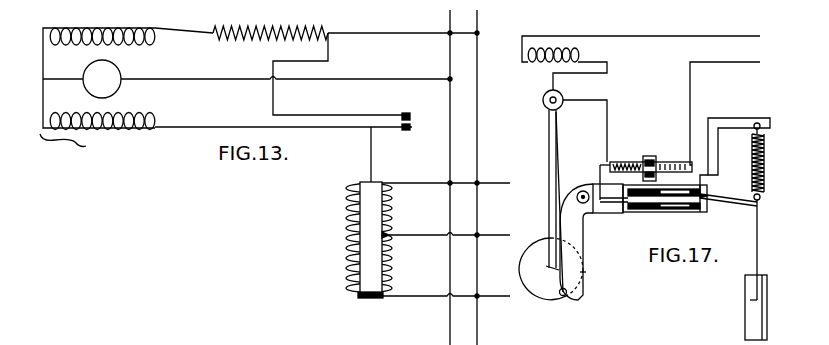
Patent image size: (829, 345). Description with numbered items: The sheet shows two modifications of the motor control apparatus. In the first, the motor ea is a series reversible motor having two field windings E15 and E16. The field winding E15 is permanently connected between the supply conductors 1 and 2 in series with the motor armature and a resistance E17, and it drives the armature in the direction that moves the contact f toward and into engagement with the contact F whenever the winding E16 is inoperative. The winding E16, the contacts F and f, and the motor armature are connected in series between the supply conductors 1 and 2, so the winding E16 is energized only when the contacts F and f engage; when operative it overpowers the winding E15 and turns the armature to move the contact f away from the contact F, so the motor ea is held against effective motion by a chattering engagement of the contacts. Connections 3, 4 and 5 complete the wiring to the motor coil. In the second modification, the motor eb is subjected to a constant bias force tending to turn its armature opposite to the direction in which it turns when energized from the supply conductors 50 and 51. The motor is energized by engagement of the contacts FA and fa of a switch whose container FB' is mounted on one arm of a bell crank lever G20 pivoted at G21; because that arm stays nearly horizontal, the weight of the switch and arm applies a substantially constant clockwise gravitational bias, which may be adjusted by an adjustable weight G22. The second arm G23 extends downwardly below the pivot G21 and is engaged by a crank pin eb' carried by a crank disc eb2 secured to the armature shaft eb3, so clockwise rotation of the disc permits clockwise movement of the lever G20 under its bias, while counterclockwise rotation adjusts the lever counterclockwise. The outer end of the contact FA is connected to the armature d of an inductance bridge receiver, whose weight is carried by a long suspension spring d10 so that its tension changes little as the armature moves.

In FIG. 13, the field winding E15 is at (100, 30).
In FIG. 13, the resistance E17 is at (247, 28).
In FIG. 13, the field winding E16 is at (148, 135).
In FIG. 13, the motor ea is at (63, 147).
In FIG. 13, the contact f is at (406, 112).
In FIG. 13, the contact F is at (406, 132).
In FIG. 13, the supply conductor 1 is at (448, 28).
In FIG. 13, the supply conductor 2 is at (480, 28).
In FIG. 13, the conductor 3 is at (415, 296).
In FIG. 13, the conductor 4 is at (417, 186).
In FIG. 13, the conductor 5 is at (440, 235).
In FIG. 17, the supply conductor 50 is at (653, 40).
In FIG. 17, the supply conductor 51 is at (724, 62).
In FIG. 17, the motor eb is at (575, 121).
In FIG. 17, the crank pin eb' is at (552, 310).
In FIG. 17, the crank disc eb2 is at (533, 252).
In FIG. 17, the armature shaft eb3 is at (548, 268).
In FIG. 17, the bell crank lever G20 is at (590, 226).
In FIG. 17, the pivot G21 is at (584, 190).
In FIG. 17, the adjustable weight G22 is at (652, 156).
In FIG. 17, the second arm G23 is at (584, 272).
In FIG. 17, the contact fa is at (642, 176).
In FIG. 17, the contact FA is at (710, 196).
In FIG. 17, the container FB' is at (683, 211).
In FIG. 17, the suspension spring d10 is at (766, 168).
In FIG. 17, the armature d is at (762, 316).